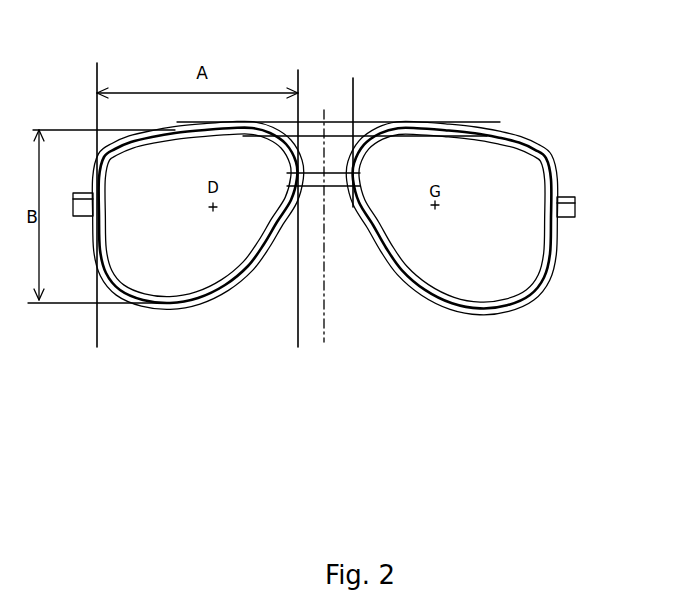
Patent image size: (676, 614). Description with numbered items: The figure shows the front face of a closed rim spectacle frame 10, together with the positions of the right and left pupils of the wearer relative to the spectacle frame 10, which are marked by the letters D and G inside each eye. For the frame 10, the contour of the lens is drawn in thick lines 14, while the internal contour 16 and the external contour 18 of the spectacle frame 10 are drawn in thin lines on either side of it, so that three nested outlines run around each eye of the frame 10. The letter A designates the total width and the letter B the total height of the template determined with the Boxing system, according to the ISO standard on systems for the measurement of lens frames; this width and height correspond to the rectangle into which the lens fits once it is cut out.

The spectacle frame 10 is at (311, 185).
The contour of the lens 14 is at (518, 297).
The internal contour of the spectacle frame 16 is at (105, 242).
The external contour of the spectacle frame 18 is at (98, 275).